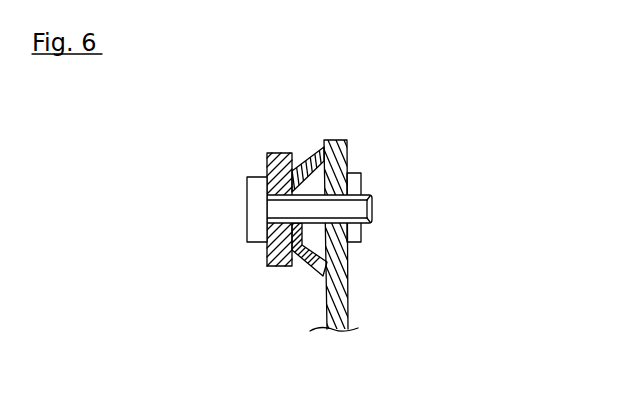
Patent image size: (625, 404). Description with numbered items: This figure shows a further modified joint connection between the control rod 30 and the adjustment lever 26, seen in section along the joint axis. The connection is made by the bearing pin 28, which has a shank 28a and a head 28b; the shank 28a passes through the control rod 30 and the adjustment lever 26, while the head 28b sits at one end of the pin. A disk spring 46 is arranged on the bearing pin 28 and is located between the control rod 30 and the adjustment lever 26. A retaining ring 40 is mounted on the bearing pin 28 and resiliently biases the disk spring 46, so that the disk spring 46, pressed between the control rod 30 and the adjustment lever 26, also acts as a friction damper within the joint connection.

The adjustment lever 26 is at (348, 303).
The control rod 30 is at (277, 266).
The disk spring 46 is at (300, 165).
The retaining ring 40 is at (363, 180).
The bearing pin 28 is at (240, 203).
The shank 28a is at (247, 217).
The head 28b is at (373, 215).